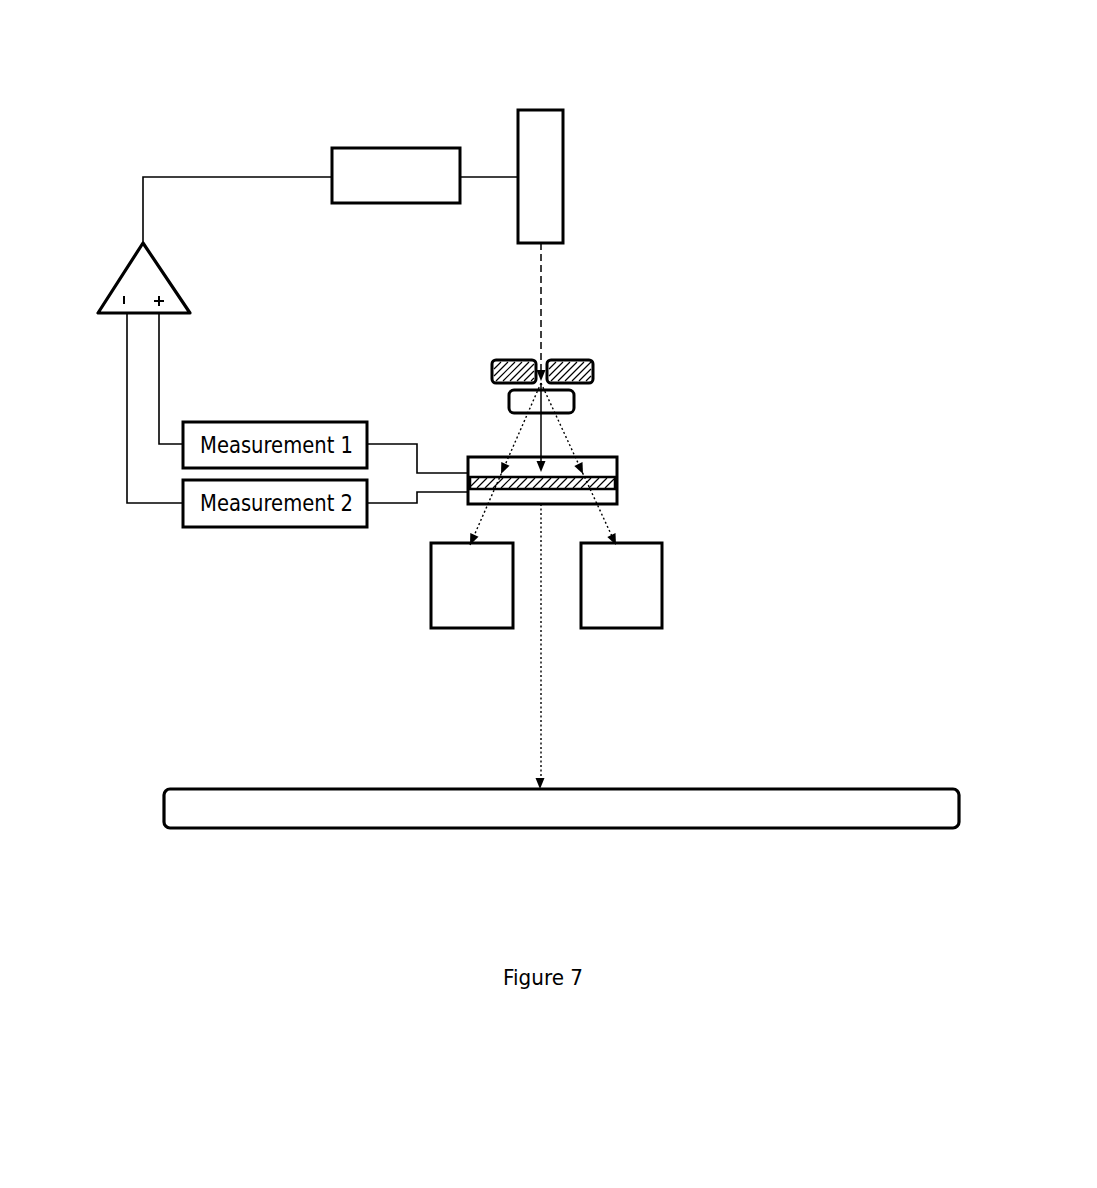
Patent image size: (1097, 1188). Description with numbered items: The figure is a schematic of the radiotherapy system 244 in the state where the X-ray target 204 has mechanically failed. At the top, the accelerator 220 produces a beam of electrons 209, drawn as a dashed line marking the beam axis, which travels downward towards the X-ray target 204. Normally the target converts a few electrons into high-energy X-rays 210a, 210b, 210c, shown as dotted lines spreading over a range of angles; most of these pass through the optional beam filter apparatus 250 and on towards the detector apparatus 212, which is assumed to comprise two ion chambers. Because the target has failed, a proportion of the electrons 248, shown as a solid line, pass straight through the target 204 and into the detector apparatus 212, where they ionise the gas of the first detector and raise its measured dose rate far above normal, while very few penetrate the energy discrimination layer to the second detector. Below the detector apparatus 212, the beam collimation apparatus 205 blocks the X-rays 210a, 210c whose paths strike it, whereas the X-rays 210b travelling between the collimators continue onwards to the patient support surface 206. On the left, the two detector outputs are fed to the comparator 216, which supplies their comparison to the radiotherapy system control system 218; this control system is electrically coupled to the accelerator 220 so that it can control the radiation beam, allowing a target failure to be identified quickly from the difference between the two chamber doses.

The radiotherapy system 244 is at (256, 86).
The comparator 216 is at (122, 280).
The radiotherapy system control system 218 is at (406, 192).
The accelerator 220 is at (563, 202).
The beam of electrons 209 is at (538, 303).
The X-ray target 204 is at (593, 370).
The beam filter apparatus 250 is at (509, 399).
The electrons 248 is at (575, 413).
The detector apparatus 212 is at (636, 477).
The X-rays 210a is at (506, 446).
The X-rays 210c is at (586, 458).
The X-rays 210b is at (540, 727).
The beam collimation apparatus 205 is at (431, 585).
The patient support surface 206 is at (214, 789).